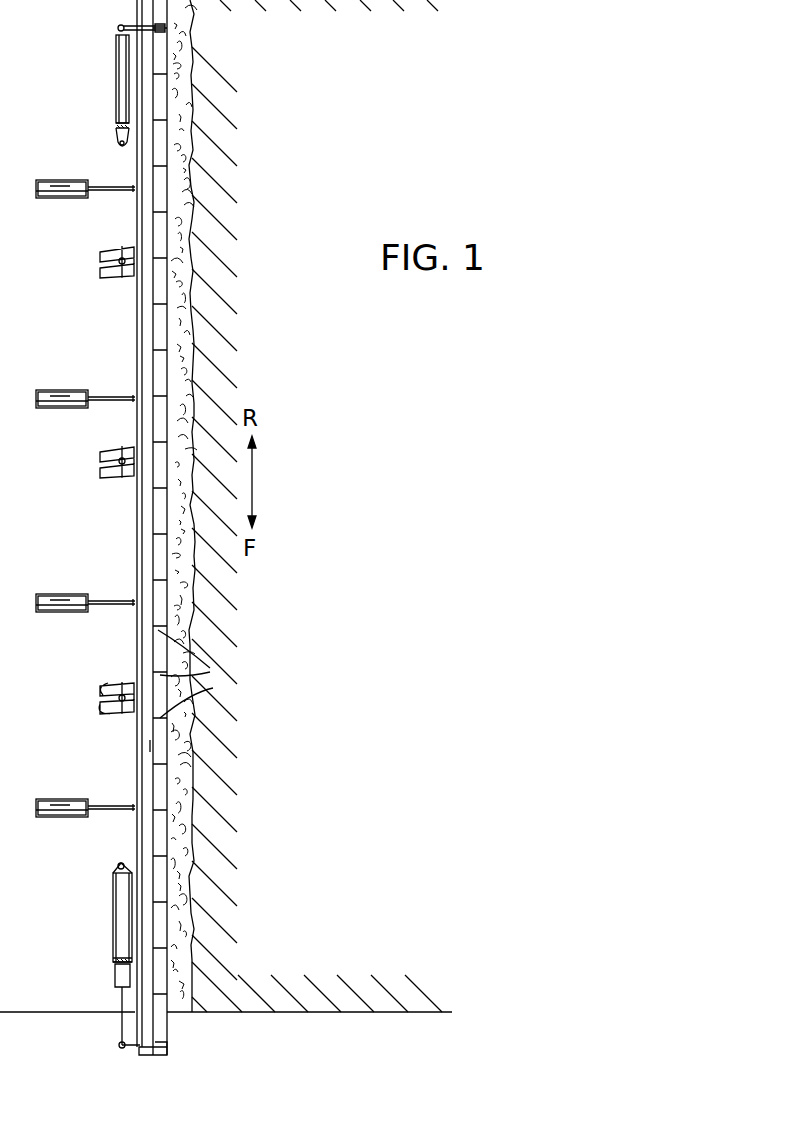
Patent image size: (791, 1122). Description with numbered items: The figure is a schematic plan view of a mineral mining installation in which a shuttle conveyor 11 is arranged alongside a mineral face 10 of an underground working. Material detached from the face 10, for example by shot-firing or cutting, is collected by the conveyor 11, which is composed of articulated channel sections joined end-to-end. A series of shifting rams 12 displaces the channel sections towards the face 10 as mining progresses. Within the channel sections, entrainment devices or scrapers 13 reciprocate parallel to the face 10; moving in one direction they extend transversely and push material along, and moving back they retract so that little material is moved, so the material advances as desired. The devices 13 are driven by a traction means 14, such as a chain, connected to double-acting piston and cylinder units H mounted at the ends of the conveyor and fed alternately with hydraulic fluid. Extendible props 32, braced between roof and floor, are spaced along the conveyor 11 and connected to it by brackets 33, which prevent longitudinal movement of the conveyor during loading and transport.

The mineral face 10 is at (272, 799).
The shuttle conveyor 11 is at (132, 541).
The shifting rams 12 is at (62, 200).
The entrainment devices 13 is at (199, 674).
The traction means 14 is at (150, 746).
The extendible props 32 is at (121, 255).
The brackets 33 is at (121, 273).
The piston and cylinder units H is at (116, 90).